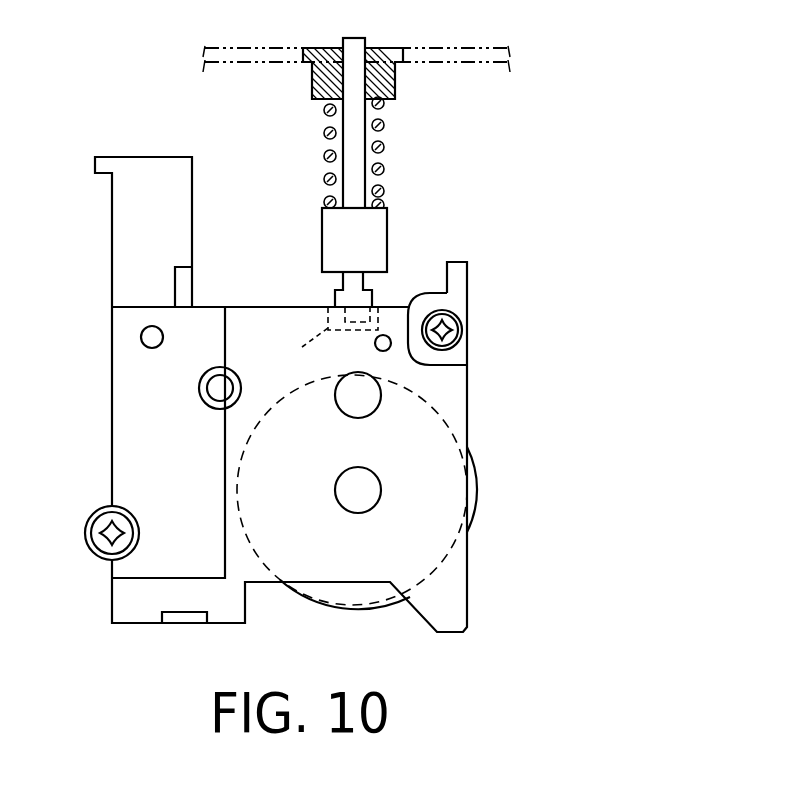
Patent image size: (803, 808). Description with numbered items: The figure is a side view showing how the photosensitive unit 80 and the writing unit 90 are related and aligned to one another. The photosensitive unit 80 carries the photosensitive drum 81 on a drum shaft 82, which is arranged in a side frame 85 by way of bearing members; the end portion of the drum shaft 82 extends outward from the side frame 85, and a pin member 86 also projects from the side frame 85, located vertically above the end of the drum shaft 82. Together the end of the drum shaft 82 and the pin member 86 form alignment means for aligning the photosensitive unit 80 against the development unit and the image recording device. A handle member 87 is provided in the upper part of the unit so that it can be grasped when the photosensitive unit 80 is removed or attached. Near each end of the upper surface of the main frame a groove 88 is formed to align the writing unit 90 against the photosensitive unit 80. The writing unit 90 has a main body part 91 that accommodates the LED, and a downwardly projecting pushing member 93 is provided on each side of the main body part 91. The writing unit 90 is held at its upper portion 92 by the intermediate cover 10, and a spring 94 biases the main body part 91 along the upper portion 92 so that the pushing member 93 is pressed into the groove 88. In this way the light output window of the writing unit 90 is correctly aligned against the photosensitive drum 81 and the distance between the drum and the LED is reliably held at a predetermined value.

The intermediate cover 10 is at (452, 46).
The photosensitive unit 80 is at (326, 394).
The photosensitive drum 81 is at (360, 593).
The drum shaft 82 is at (347, 495).
The side frame 85 is at (455, 392).
The pin member 86 is at (359, 407).
The handle member 87 is at (100, 160).
The groove 88 is at (293, 345).
The writing unit 90 is at (392, 184).
The main body part 91 is at (375, 248).
The upper portion 92 is at (350, 145).
The pushing member 93 is at (338, 298).
The spring 94 is at (380, 167).